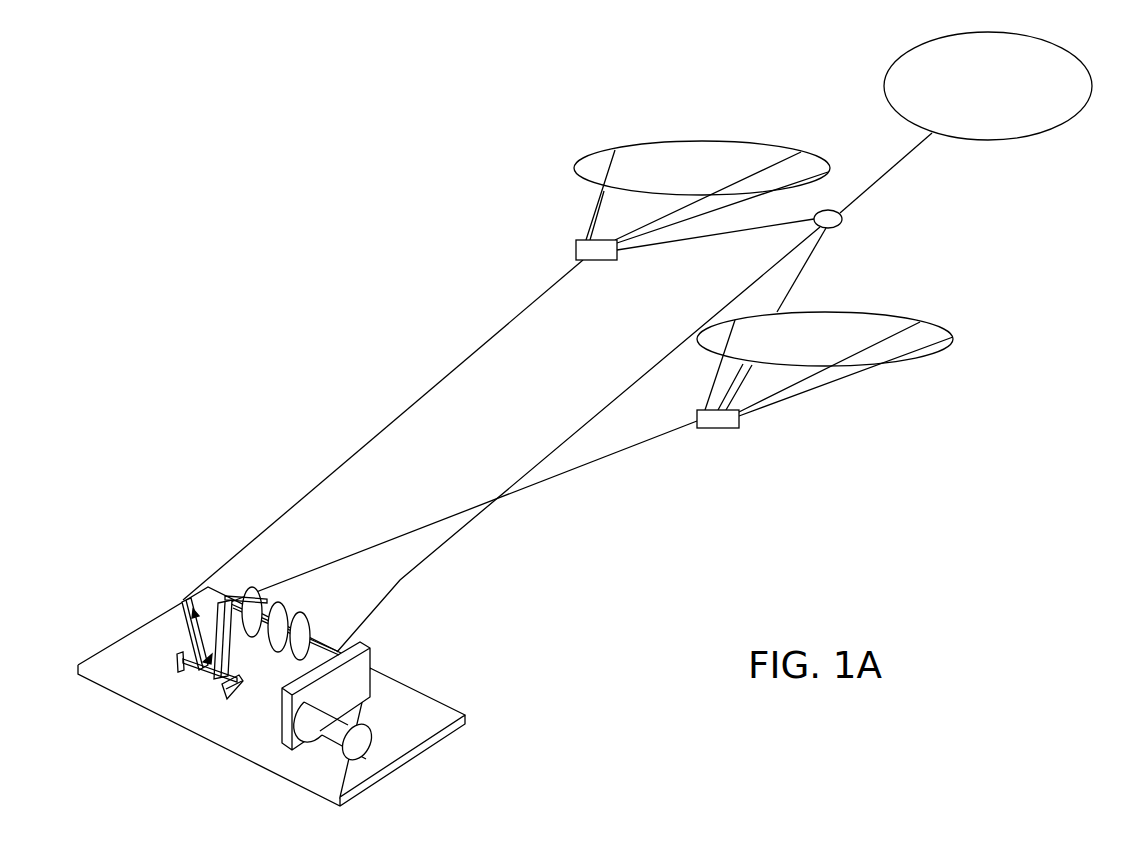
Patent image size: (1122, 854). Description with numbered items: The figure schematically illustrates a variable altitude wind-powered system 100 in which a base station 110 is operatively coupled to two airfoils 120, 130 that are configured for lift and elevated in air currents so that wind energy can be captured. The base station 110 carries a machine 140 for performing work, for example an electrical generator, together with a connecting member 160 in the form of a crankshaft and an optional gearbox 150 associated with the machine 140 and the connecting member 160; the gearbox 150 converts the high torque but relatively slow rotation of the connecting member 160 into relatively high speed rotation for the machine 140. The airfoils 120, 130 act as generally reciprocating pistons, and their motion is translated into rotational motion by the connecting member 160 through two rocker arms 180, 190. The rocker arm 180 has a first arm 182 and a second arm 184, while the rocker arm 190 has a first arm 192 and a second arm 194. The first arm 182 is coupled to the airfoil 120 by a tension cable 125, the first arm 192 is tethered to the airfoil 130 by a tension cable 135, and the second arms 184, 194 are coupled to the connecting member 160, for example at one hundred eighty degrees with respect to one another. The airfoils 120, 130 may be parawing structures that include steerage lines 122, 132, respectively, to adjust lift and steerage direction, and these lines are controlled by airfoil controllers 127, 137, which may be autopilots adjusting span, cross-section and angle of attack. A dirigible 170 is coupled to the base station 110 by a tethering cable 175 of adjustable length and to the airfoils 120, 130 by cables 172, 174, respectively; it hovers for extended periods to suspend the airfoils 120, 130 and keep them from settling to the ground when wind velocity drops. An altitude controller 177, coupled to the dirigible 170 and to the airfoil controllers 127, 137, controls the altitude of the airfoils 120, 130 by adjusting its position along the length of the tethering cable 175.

The wind-powered system 100 is at (236, 213).
The base station 110 is at (434, 708).
The airfoil 120 is at (693, 162).
The steerage lines 122 is at (597, 205).
The tension cable 125 is at (383, 430).
The airfoil controller 127 is at (580, 240).
The airfoil 130 is at (930, 336).
The steerage lines 132 is at (838, 384).
The tension cable 135 is at (594, 465).
The airfoil controller 137 is at (737, 425).
The machine 140 is at (358, 745).
The gearbox 150 is at (364, 677).
The connecting member 160 is at (338, 645).
The dirigible 170 is at (1032, 110).
The cable 172 is at (700, 241).
The cable 174 is at (800, 278).
The tethering cable 175 is at (613, 400).
The altitude controller 177 is at (843, 216).
The rocker arm 180 is at (180, 632).
The first arm 182 is at (184, 600).
The second arm 184 is at (250, 592).
The rocker arm 190 is at (202, 662).
The first arm 192 is at (213, 658).
The second arm 194 is at (273, 654).